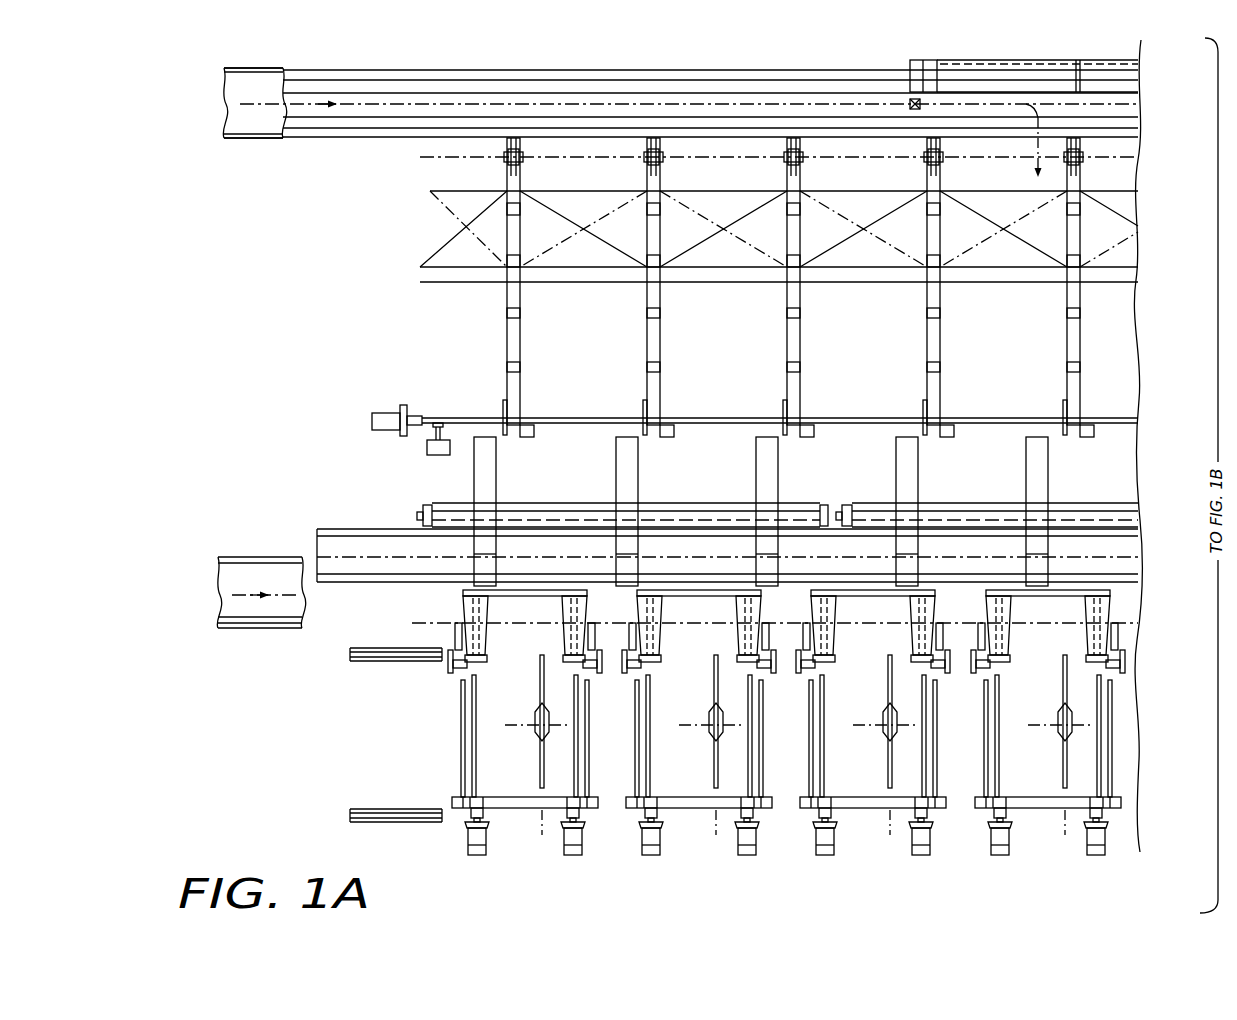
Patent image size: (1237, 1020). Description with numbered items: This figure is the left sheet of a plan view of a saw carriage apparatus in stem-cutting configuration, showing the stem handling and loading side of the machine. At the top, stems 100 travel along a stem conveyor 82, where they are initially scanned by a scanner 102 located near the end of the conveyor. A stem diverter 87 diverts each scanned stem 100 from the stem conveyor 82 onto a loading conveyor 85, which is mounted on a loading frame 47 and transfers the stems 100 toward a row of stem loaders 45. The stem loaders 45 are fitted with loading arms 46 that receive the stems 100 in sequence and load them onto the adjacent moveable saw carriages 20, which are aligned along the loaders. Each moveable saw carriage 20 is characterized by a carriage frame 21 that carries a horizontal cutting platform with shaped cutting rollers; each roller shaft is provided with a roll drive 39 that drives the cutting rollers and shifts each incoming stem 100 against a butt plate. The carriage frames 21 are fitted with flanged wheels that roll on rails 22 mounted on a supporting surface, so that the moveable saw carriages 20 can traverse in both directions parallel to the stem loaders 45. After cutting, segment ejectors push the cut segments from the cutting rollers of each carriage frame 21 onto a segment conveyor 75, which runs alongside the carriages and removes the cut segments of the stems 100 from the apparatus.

The moveable saw carriage 20 is at (684, 826).
The carriage frame 21 is at (636, 812).
The rails 22 is at (425, 664).
The roll drive 39 is at (558, 862).
The stem loader 45 is at (440, 483).
The loading arms 46 is at (496, 567).
The loading frame 47 is at (440, 247).
The segment conveyor 75 is at (407, 588).
The stem conveyor 82 is at (712, 66).
The loading conveyor 85 is at (494, 296).
The stem diverter 87 is at (904, 60).
The stem 100 is at (1152, 124).
The scanner 102 is at (229, 142).